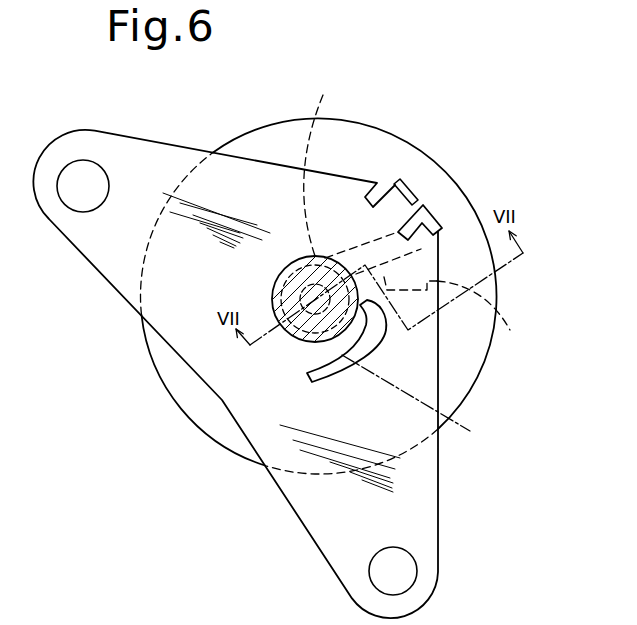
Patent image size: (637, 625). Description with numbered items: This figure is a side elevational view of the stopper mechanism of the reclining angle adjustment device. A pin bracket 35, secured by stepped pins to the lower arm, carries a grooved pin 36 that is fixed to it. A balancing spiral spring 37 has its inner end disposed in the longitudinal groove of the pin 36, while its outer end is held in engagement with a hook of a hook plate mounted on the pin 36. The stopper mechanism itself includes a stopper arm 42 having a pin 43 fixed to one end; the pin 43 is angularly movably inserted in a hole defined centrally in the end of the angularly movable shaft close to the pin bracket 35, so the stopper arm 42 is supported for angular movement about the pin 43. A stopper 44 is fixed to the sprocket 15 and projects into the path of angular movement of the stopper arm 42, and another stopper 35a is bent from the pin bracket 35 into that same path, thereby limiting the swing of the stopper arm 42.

The sprocket 15 is at (476, 374).
The pin bracket 35 is at (168, 144).
The stopper 35a is at (401, 186).
The grooved pin 36 is at (272, 294).
The balancing spiral spring 37 is at (378, 350).
The stopper arm 42 is at (430, 205).
The pin 43 is at (321, 164).
The stopper 44 is at (510, 330).